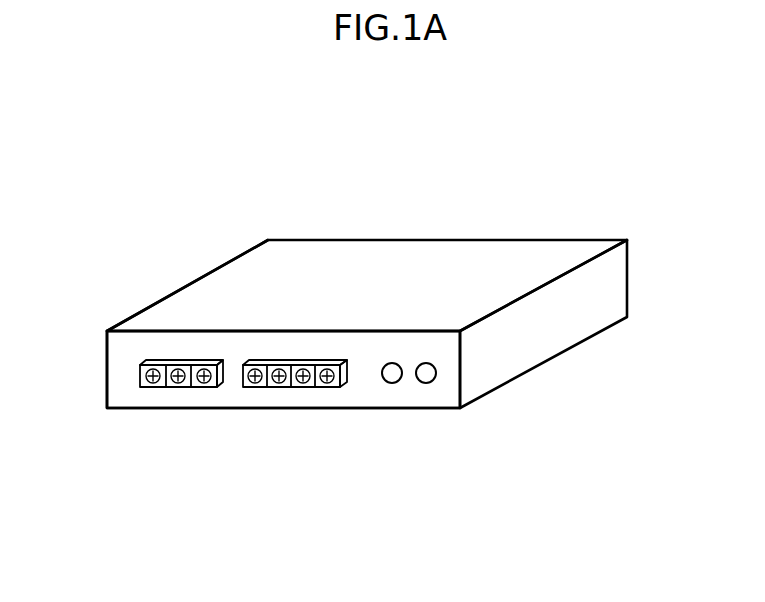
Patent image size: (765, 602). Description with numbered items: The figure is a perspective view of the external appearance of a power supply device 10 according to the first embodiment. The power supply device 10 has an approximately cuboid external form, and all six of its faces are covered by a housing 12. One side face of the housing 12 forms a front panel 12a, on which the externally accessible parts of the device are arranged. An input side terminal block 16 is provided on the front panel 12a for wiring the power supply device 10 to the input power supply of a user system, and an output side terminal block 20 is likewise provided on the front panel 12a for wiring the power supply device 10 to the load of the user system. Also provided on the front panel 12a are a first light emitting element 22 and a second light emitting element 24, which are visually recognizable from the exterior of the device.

The power supply device 10 is at (571, 225).
The housing 12 is at (241, 281).
The front panel 12a is at (127, 353).
The input side terminal block 16 is at (155, 387).
The output side terminal block 20 is at (277, 387).
The first light emitting element 22 is at (427, 383).
The second light emitting element 24 is at (393, 383).